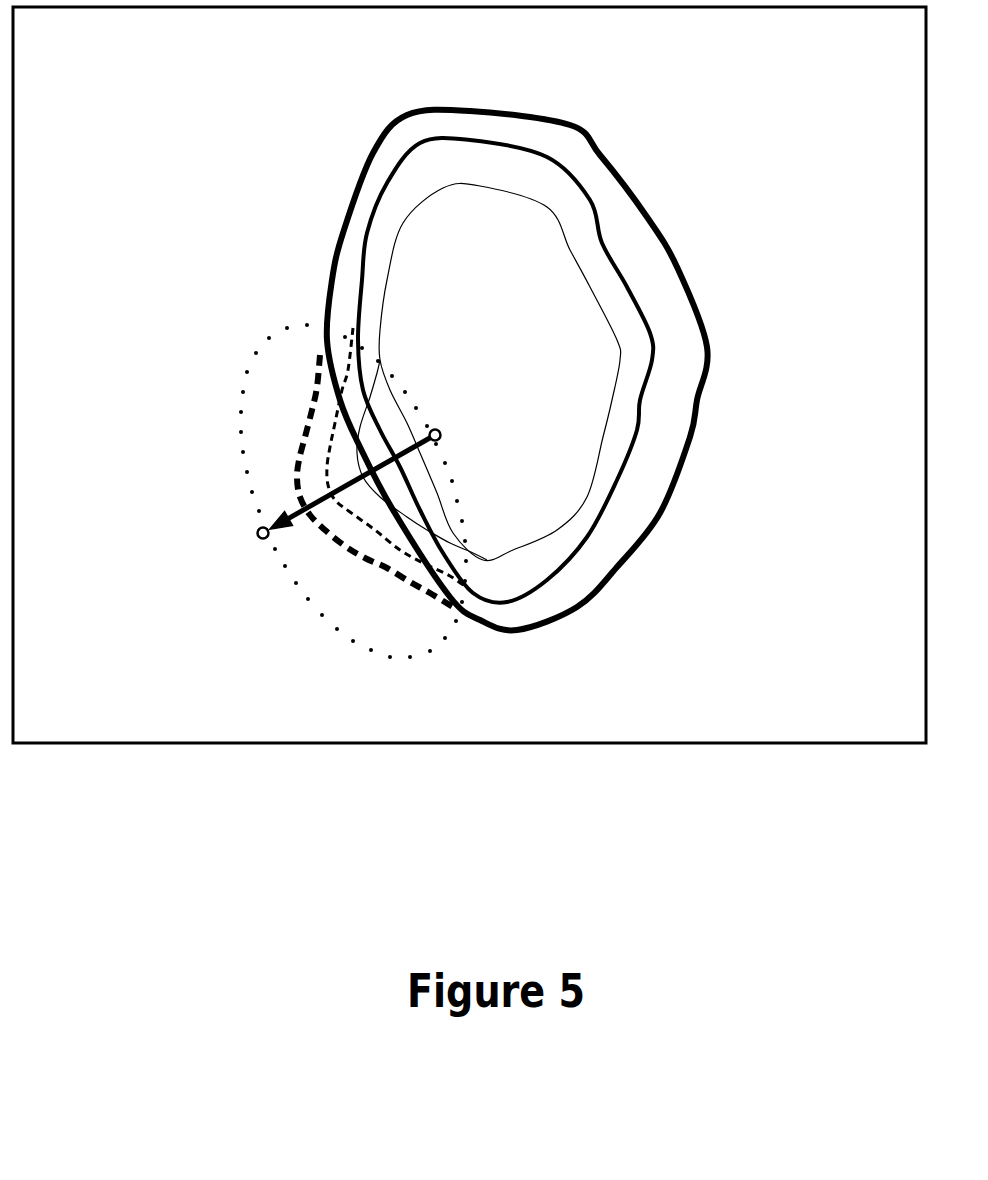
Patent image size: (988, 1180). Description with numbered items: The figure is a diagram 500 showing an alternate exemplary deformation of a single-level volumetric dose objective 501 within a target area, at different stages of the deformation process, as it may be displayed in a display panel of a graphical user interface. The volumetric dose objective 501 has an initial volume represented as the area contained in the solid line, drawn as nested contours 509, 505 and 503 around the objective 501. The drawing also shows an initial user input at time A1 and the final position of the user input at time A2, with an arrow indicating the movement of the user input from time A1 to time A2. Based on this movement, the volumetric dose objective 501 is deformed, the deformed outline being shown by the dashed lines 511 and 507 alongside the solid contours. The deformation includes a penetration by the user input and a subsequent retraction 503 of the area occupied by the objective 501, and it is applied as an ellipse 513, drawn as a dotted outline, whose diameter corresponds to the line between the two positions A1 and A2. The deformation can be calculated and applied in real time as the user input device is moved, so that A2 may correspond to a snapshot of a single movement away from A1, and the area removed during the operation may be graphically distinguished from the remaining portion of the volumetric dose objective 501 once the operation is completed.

The diagram 500 is at (520, 693).
The volumetric dose objective 501 is at (510, 340).
The retraction 503 is at (382, 377).
The intermediate boundary contour 505 is at (370, 225).
The displaced intermediate contour (dashed) 507 is at (330, 437).
The outer boundary contour 509 is at (377, 150).
The displaced outer contour (dashed) 511 is at (320, 358).
The ellipse 513 is at (300, 598).
The time of initial user input A1 is at (364, 470).
The time of final position of user input A2 is at (248, 535).